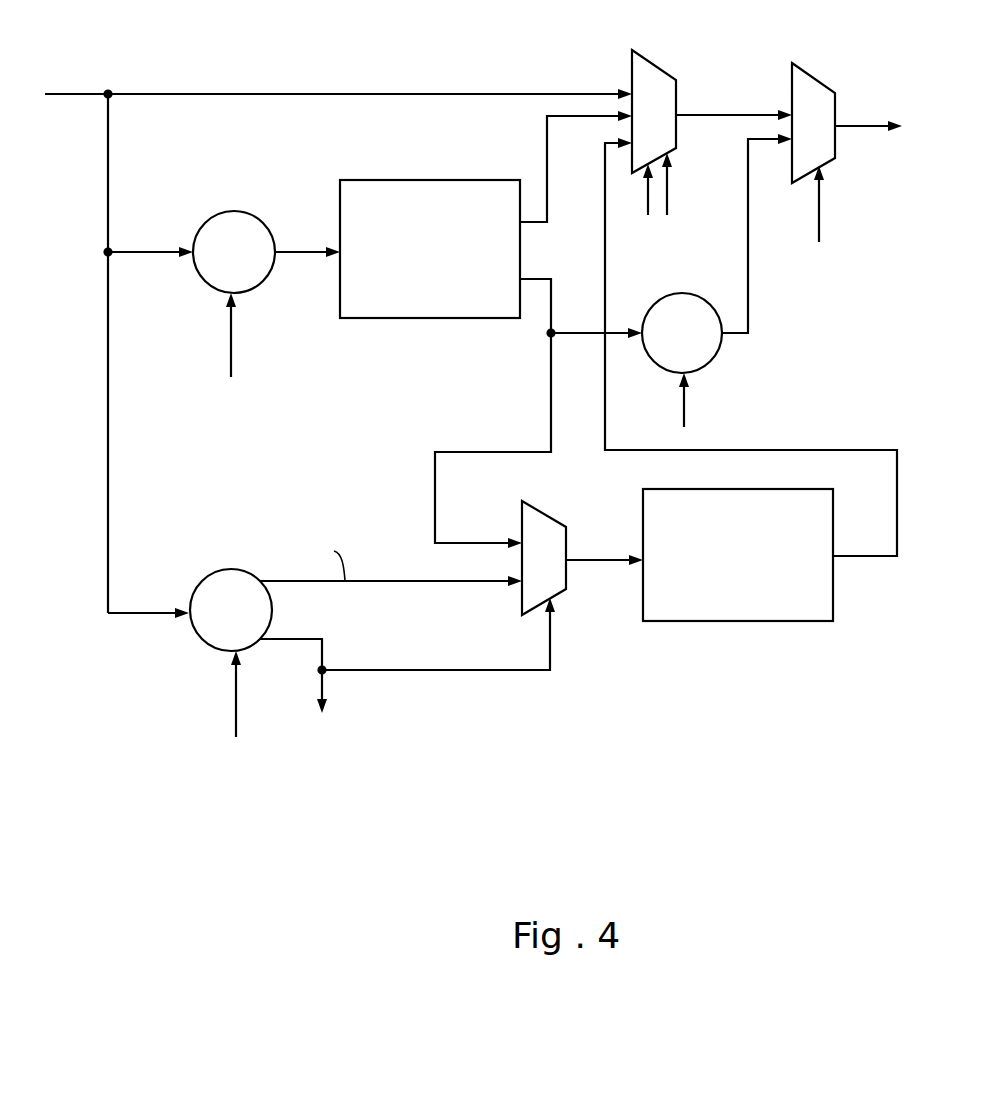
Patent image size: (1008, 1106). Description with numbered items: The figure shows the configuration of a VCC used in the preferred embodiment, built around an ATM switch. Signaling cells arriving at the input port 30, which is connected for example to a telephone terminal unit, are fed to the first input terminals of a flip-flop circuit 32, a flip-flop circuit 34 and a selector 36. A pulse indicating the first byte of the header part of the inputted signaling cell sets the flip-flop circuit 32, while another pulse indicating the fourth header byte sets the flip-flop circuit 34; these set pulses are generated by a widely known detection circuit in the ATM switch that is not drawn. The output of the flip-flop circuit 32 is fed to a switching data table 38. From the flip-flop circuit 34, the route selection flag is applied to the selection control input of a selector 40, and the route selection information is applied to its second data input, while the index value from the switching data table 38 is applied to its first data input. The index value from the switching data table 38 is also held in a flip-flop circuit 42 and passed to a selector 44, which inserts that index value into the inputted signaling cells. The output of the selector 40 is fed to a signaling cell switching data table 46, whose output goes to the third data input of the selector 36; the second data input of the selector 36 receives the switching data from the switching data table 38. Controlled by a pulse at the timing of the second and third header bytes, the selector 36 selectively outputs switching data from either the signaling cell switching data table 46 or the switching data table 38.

The input port 30 is at (75, 94).
The flip-flop circuit 32 is at (232, 211).
The flip-flop circuit 34 is at (228, 568).
The selector 36 is at (668, 72).
The switching data table 38 is at (430, 180).
The selector 40 is at (560, 525).
The flip-flop circuit 42 is at (678, 293).
The selector 44 is at (823, 80).
The signaling cell switching data table 46 is at (680, 621).